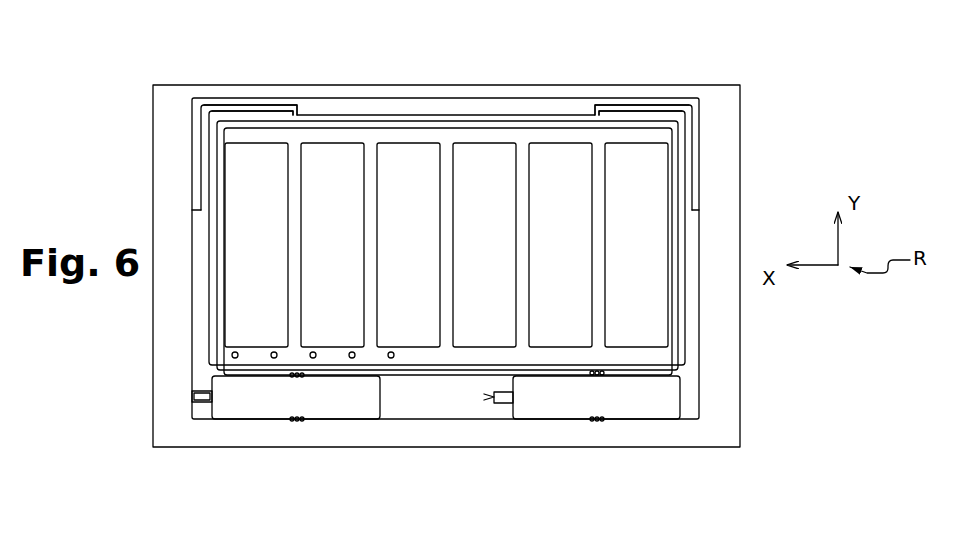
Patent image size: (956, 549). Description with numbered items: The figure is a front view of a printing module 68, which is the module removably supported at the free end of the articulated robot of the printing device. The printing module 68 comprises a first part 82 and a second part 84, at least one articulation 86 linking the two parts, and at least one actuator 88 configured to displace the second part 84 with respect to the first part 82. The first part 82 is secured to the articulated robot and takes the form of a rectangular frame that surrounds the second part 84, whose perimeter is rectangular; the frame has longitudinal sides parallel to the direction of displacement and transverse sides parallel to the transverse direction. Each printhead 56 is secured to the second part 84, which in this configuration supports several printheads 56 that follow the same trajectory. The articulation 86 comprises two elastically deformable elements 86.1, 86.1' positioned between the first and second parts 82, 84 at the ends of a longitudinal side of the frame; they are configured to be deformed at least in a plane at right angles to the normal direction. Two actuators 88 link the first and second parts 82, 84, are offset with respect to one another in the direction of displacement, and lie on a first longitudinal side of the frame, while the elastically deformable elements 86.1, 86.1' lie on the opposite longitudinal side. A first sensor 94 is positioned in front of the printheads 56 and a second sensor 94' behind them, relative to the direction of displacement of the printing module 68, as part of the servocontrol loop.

The printing module 68 is at (744, 105).
The first part 82 is at (195, 82).
The articulation 86 is at (248, 102).
The elastically deformable element 86.1 is at (255, 72).
The elastically deformable element 86.1' is at (642, 72).
The second part 84 is at (449, 133).
The first sensor 94 is at (255, 316).
The second sensor 94' is at (642, 315).
The printhead 56 is at (410, 322).
The actuator 88 is at (354, 404).